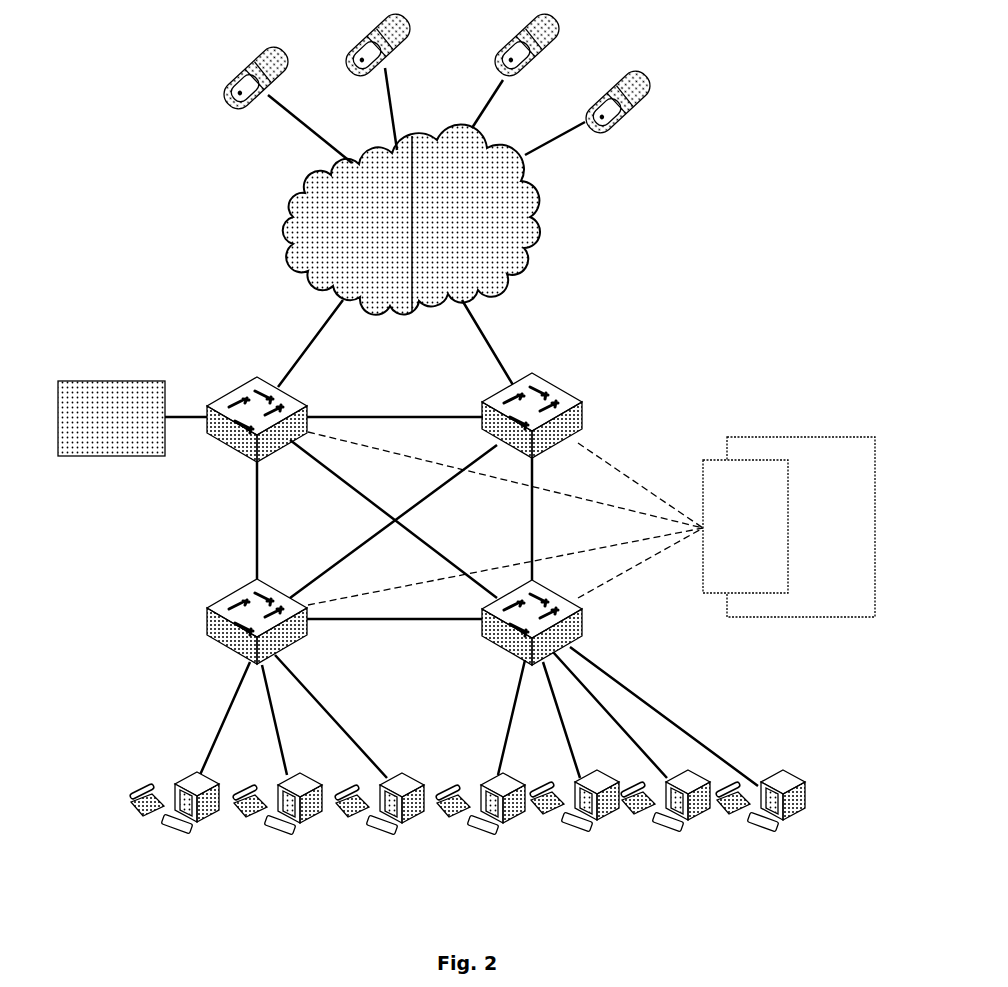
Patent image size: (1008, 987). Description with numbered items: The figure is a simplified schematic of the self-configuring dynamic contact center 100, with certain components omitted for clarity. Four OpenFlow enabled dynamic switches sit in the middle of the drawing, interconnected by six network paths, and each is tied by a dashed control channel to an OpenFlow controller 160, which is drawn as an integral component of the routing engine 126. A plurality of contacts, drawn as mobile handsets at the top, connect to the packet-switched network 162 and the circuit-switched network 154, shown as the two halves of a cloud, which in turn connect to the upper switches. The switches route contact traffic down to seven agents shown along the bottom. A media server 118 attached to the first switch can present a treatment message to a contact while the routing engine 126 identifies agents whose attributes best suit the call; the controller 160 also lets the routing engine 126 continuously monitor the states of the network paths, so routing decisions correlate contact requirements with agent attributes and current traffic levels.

The contact center 100 is at (97, 160).
The media server 118 is at (108, 460).
The routing engine 126 is at (801, 527).
The circuit-switched network 154 is at (411, 219).
The OpenFlow controller 160 is at (745, 526).
The packet-switched network 162 is at (411, 219).